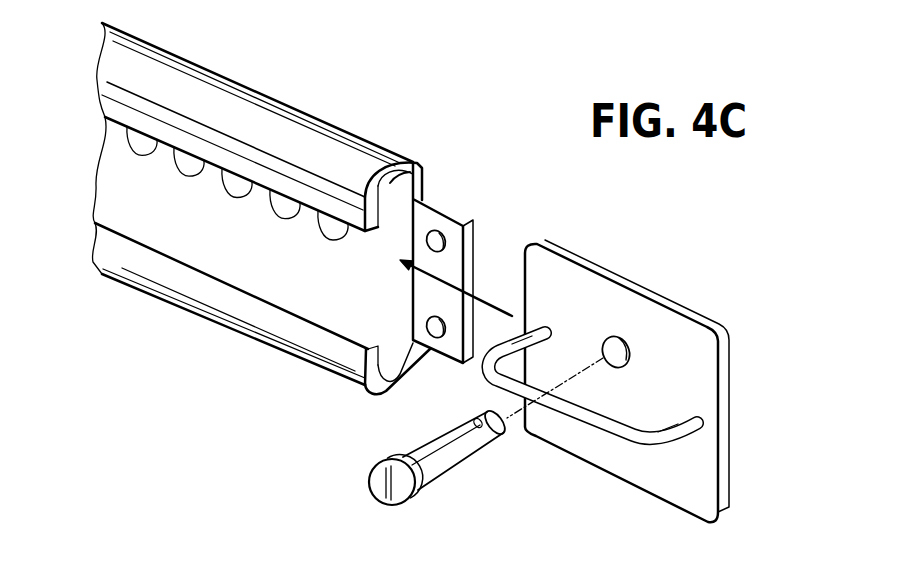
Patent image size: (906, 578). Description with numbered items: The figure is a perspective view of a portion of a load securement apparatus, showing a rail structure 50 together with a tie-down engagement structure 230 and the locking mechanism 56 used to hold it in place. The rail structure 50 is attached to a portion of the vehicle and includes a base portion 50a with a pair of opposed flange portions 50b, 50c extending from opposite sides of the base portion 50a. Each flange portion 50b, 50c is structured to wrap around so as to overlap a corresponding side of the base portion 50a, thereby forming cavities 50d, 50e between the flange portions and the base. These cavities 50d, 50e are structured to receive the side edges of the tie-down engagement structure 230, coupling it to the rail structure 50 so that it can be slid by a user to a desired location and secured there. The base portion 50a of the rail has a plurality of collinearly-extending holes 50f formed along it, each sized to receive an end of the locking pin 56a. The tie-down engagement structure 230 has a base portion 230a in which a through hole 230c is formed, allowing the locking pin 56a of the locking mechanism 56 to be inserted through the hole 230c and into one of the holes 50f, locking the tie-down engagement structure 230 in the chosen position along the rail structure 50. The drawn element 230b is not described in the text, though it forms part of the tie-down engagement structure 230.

The rail structure 50 is at (278, 132).
The base portion 50a is at (452, 216).
The flange portion 50b is at (200, 95).
The flange portion 50c is at (258, 328).
The cavity 50d is at (420, 167).
The cavity 50e is at (400, 358).
The holes 50f is at (232, 185).
The locking mechanism 56 is at (377, 464).
The locking pin 56a is at (425, 455).
The tie-down engagement structure 230 is at (640, 290).
The base portion 230a is at (687, 363).
The handle 230b is at (637, 440).
The through hole 230c is at (628, 367).